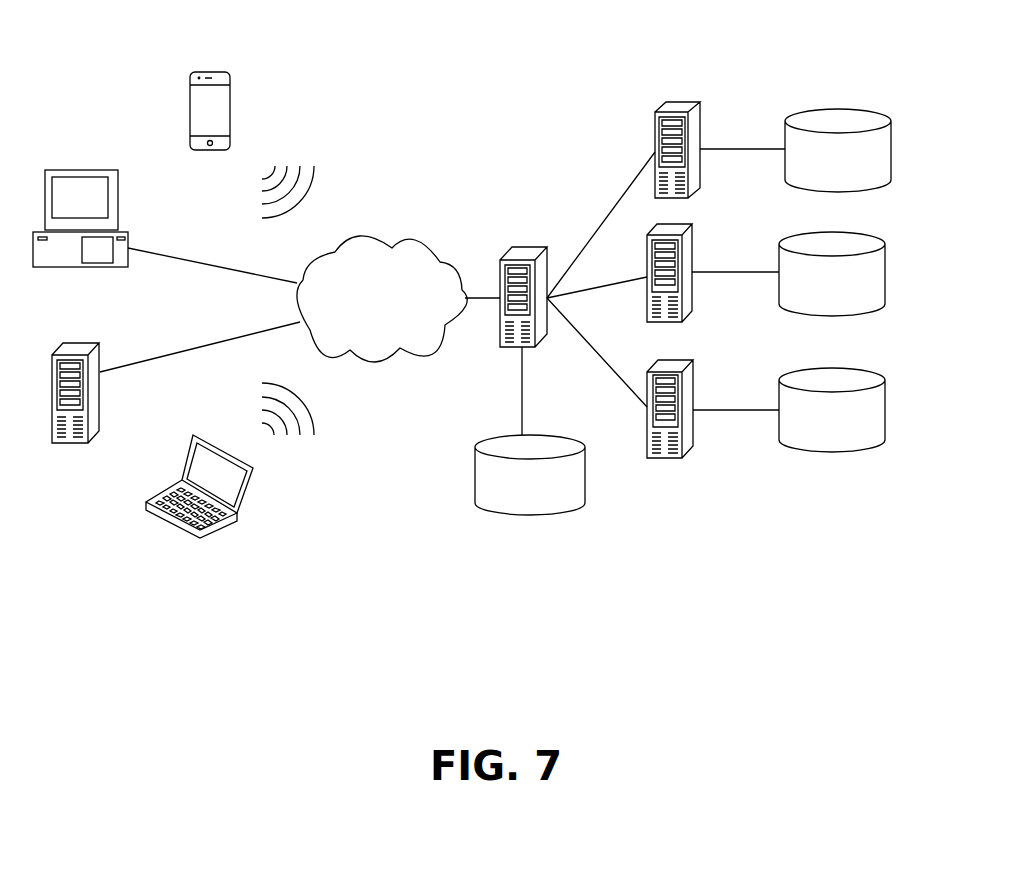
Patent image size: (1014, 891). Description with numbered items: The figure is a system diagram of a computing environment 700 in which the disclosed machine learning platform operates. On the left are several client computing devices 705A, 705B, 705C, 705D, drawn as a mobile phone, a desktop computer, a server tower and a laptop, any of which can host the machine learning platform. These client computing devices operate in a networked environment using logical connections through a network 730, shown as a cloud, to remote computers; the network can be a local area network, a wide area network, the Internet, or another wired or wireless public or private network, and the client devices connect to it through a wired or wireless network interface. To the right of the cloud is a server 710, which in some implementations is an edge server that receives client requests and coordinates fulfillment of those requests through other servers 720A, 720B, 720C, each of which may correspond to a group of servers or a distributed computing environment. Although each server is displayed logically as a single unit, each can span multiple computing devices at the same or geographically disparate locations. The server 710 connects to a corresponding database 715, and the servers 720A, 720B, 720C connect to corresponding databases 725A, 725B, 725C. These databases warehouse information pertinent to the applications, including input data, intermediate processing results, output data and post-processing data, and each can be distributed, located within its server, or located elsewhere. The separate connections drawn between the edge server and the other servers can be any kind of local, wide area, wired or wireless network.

The environment 700 is at (93, 75).
The client computing device 705A is at (230, 73).
The client computing device 705B is at (118, 176).
The client computing device 705C is at (92, 341).
The client computing device 705D is at (245, 502).
The network 730 is at (397, 250).
The server 710 is at (537, 253).
The database 715 is at (535, 436).
The server 720A is at (692, 100).
The server 720B is at (688, 223).
The server 720C is at (683, 364).
The database 725A is at (843, 110).
The database 725B is at (838, 233).
The database 725C is at (848, 373).